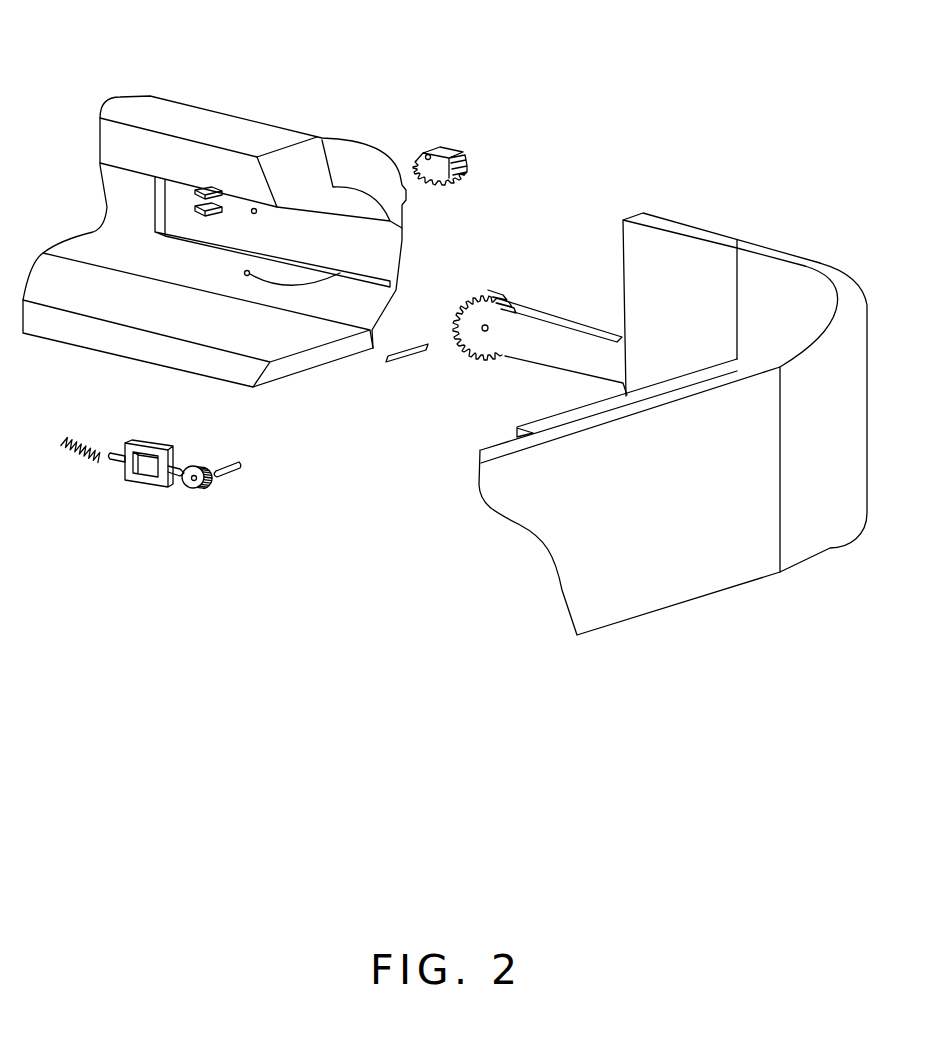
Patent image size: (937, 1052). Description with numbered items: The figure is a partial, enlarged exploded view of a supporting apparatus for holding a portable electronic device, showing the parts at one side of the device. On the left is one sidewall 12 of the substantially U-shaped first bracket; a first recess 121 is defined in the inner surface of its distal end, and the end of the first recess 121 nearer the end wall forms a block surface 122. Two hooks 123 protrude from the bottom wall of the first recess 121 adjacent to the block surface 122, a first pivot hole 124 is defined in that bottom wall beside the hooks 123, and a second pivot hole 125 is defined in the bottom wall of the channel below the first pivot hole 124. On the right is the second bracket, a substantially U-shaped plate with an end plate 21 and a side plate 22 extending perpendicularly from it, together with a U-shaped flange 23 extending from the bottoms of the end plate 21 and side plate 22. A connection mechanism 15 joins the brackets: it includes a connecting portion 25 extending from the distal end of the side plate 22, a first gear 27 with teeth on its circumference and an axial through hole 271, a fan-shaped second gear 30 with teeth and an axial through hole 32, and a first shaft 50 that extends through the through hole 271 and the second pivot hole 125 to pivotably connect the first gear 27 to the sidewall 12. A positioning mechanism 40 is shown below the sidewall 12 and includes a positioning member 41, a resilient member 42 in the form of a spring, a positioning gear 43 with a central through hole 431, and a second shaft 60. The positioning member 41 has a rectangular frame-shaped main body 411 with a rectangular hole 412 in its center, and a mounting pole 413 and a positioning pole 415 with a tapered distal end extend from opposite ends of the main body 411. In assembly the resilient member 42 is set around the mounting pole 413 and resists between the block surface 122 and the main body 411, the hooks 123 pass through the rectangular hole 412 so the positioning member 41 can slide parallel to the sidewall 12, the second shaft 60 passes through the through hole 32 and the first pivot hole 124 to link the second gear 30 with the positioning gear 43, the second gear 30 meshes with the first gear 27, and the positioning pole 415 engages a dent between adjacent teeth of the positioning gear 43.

The sidewall 12 is at (140, 118).
The first recess 121 is at (313, 243).
The block surface 122 is at (157, 191).
The hooks 123 is at (200, 187).
The first pivot hole 124 is at (254, 208).
The second pivot hole 125 is at (340, 273).
The connection mechanism 15 is at (433, 65).
The second gear 30 is at (447, 150).
The through hole 32 is at (426, 156).
The first gear 27 is at (500, 290).
The through hole 271 is at (483, 331).
The connecting portion 25 is at (557, 343).
The first shaft 50 is at (427, 346).
The side plate 22 is at (693, 280).
The end plate 21 is at (673, 558).
The flange 23 is at (517, 427).
The positioning mechanism 40 is at (33, 550).
The positioning member 41 is at (145, 493).
The main body 411 is at (150, 465).
The rectangular hole 412 is at (152, 462).
The mounting pole 413 is at (117, 450).
The positioning pole 415 is at (183, 470).
The resilient member 42 is at (77, 452).
The positioning gear 43 is at (192, 488).
The through hole 431 is at (203, 484).
The second shaft 60 is at (241, 464).